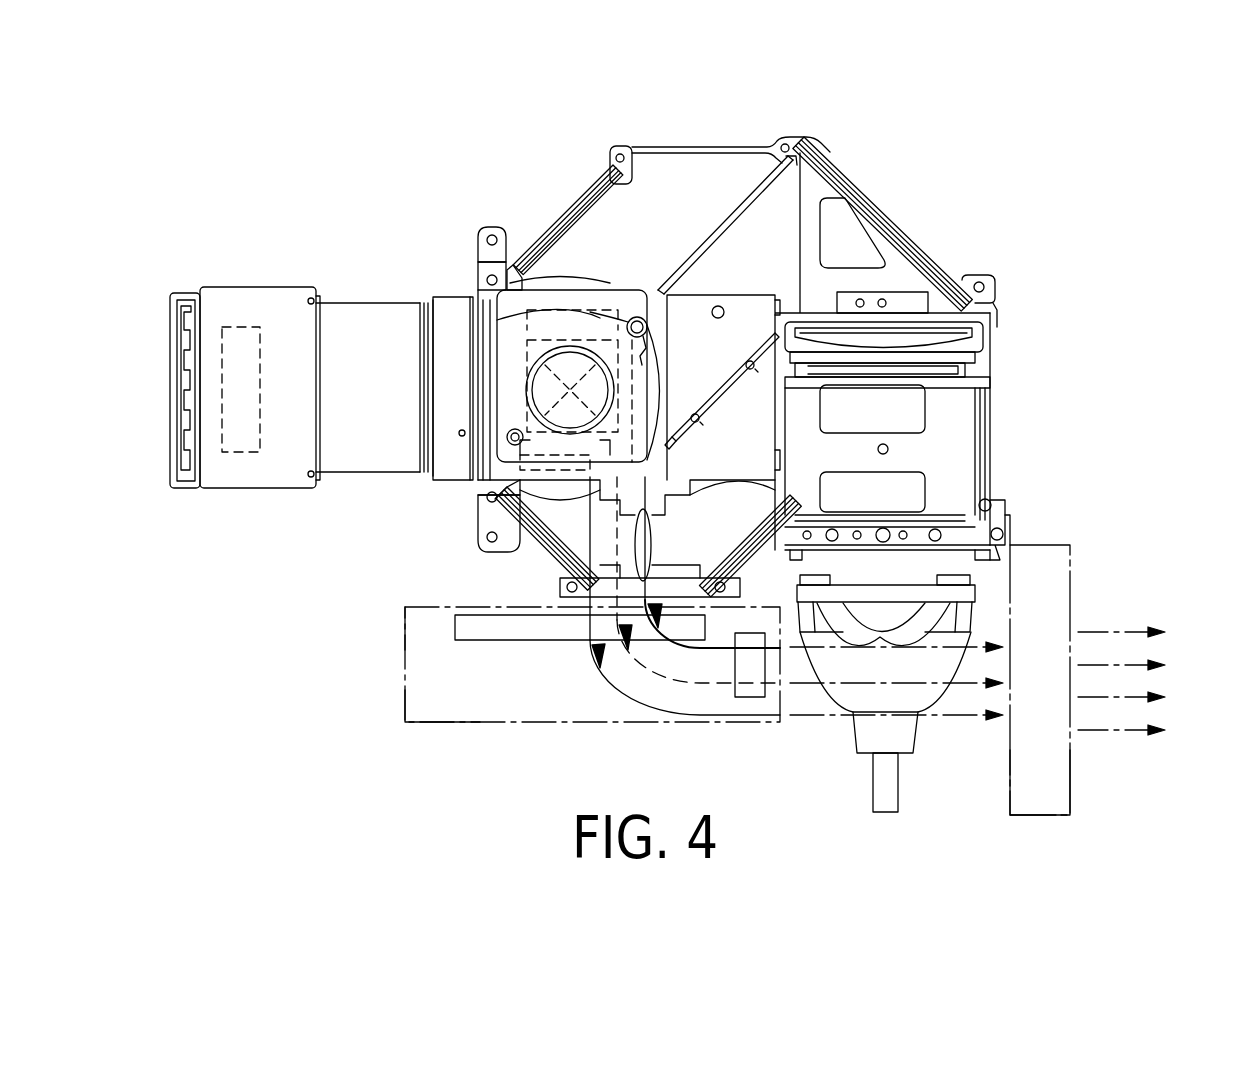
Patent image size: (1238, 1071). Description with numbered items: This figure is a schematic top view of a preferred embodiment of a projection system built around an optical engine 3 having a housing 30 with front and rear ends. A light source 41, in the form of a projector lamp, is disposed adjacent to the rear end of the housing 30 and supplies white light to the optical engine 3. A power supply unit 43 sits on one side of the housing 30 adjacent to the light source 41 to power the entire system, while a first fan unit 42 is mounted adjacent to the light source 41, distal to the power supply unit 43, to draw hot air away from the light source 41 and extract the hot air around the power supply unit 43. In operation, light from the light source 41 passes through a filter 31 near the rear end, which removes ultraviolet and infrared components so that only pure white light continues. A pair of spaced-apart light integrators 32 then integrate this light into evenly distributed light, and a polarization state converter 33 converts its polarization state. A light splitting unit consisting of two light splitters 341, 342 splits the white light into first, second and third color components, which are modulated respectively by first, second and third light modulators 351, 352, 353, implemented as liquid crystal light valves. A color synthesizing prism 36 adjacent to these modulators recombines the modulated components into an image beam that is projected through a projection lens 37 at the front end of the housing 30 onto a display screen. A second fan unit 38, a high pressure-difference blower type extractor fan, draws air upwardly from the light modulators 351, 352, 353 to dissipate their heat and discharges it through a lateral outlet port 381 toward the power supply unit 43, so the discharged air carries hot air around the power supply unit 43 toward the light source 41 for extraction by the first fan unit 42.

The optical engine 3 is at (598, 160).
The housing 30 is at (825, 150).
The filter 31 is at (945, 545).
The light integrators 32 is at (933, 517).
The polarization state converter 33 is at (885, 358).
The light splitter 341 is at (752, 232).
The light splitter 342 is at (723, 376).
The first light modulator 351 is at (538, 305).
The second light modulator 352 is at (640, 320).
The third light modulator 353 is at (505, 470).
The color synthesizing prism 36 is at (475, 297).
The projection lens 37 is at (388, 305).
The second fan unit 38 is at (510, 380).
The outlet port 381 is at (637, 455).
The light source 41 is at (910, 730).
The first fan unit 42 is at (1045, 547).
The power supply unit 43 is at (405, 622).